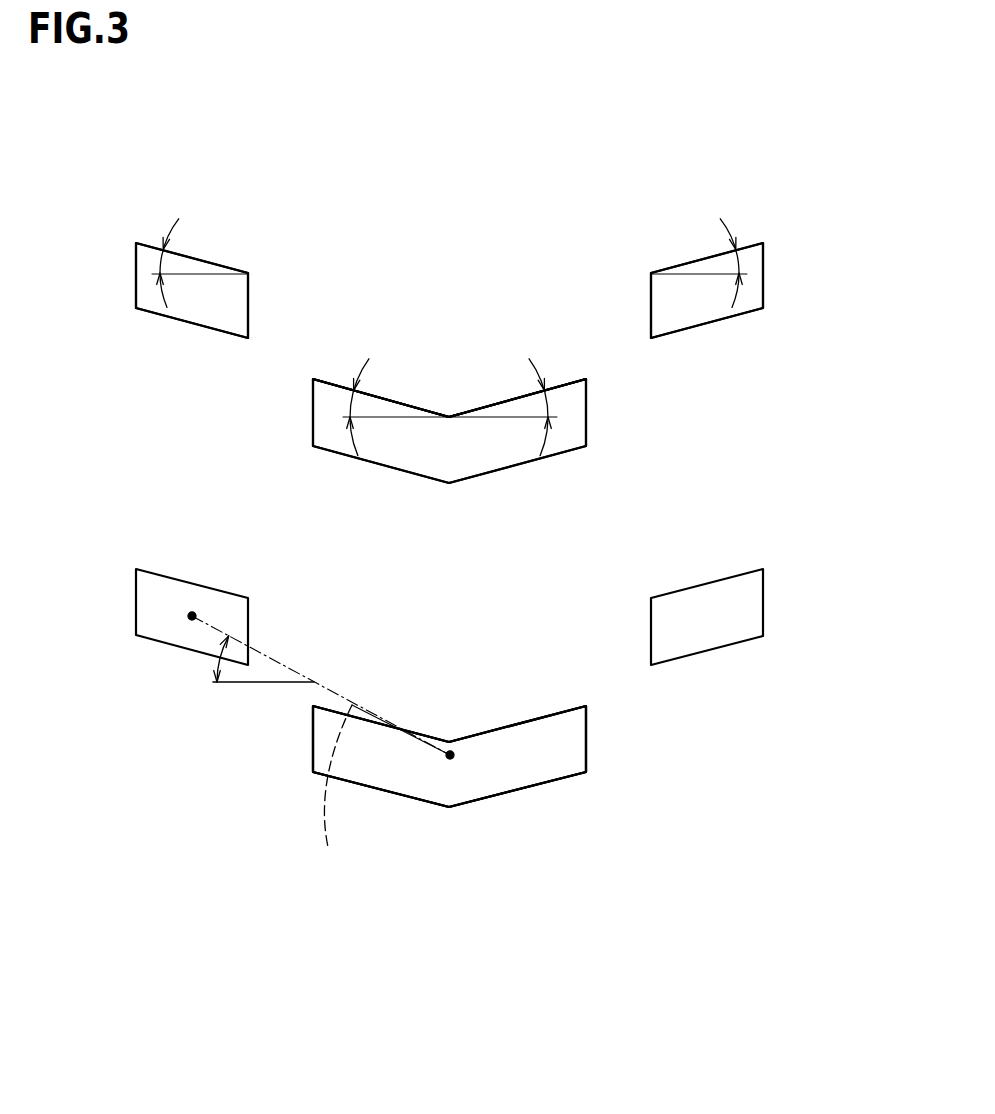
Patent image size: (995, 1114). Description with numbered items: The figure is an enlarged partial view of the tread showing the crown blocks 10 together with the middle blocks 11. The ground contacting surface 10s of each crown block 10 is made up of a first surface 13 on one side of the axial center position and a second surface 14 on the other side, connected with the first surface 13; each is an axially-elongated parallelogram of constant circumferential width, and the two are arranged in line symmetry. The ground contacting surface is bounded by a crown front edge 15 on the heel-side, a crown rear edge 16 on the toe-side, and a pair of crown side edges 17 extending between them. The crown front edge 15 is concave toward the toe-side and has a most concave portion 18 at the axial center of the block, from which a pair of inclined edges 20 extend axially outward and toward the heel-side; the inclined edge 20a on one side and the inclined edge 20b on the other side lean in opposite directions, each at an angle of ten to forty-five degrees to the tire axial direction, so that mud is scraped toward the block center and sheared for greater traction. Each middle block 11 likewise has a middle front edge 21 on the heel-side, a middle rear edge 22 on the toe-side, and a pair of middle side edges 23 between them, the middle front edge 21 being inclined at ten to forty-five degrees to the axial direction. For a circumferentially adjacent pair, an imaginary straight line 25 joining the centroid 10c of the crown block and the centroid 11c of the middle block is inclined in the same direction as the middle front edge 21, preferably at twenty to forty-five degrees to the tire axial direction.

The crown block 10 is at (462, 441).
The ground contacting surface 10s is at (449, 756).
The centroid of the ground contacting surface of the crown block 10c is at (450, 742).
The middle block 11 is at (208, 305).
The centroid of the ground contacting surface of the middle block 11c is at (192, 612).
The first surface 13 is at (411, 765).
The second surface 14 is at (489, 765).
The crown front edge 15 is at (517, 242).
The crown rear edge 16 is at (477, 475).
The crown side edges 17 is at (586, 430).
The most concave portion 18 is at (449, 416).
The inclined edges 20 is at (449, 398).
The inclined edge on one side 20a is at (392, 398).
The inclined edge on the other side 20b is at (507, 398).
The middle front edge 21 is at (217, 265).
The middle rear edge 22 is at (207, 327).
The middle side edges 23 is at (249, 304).
The imaginary straight line 25 is at (333, 792).